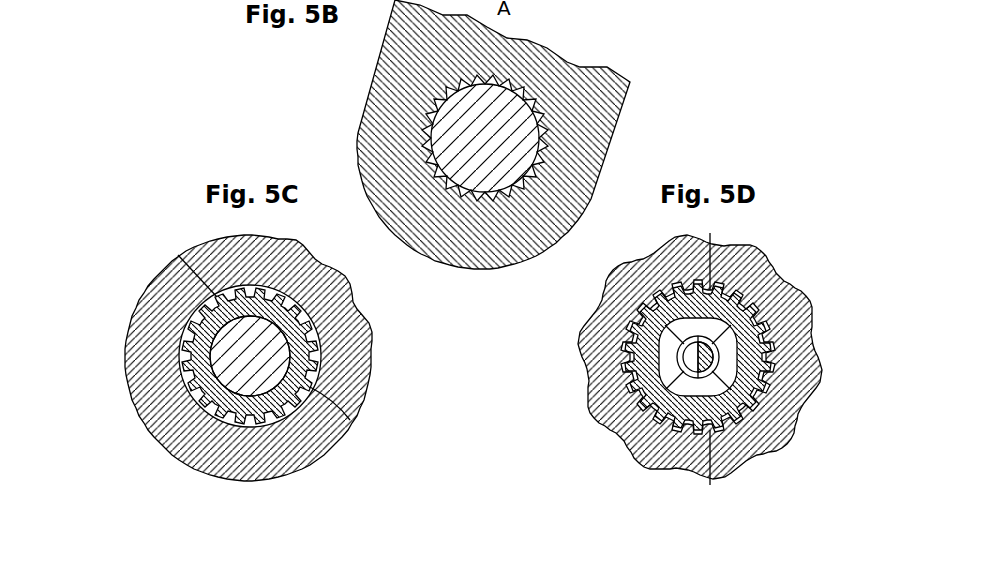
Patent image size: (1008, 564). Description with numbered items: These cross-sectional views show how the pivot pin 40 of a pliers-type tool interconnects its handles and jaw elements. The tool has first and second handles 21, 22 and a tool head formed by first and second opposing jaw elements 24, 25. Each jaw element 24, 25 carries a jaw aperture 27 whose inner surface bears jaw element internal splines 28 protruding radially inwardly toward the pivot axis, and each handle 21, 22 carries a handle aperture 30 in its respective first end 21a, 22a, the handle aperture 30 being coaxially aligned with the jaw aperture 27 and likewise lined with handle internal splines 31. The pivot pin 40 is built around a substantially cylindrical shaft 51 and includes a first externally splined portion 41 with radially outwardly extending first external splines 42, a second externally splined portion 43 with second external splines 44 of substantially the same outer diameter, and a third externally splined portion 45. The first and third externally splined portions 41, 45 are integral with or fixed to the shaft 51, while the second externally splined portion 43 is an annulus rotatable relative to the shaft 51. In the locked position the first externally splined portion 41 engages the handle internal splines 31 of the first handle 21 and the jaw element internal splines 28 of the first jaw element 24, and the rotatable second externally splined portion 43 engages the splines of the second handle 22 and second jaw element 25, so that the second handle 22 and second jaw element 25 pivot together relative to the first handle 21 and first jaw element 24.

In FIG. 5B, the first handle 21 is at (600, 80).
In FIG. 5D, the first handle 21 is at (807, 367).
In FIG. 5B, the first end of first handle 21a is at (618, 125).
In FIG. 5D, the first end of first handle 21a is at (803, 412).
In FIG. 5C, the second handle 22 is at (153, 300).
In FIG. 5C, the first end of second handle 22a is at (133, 343).
In FIG. 5D, the first jaw element 24 is at (587, 323).
In FIG. 5C, the second jaw element 25 is at (372, 326).
In FIG. 5C, the jaw aperture 27 is at (303, 310).
In FIG. 5D, the jaw aperture 27 is at (643, 400).
In FIG. 5C, the jaw element internal splines 28 is at (297, 300).
In FIG. 5D, the jaw element internal splines 28 is at (643, 380).
In FIG. 5B, the handle aperture 30 is at (528, 98).
In FIG. 5C, the handle aperture 30 is at (187, 378).
In FIG. 5D, the handle aperture 30 is at (803, 337).
In FIG. 5B, the handle internal splines 31 is at (548, 160).
In FIG. 5C, the handle internal splines 31 is at (193, 391).
In FIG. 5D, the handle internal splines 31 is at (762, 322).
In FIG. 5B, the pivot pin 40 is at (508, 163).
In FIG. 5C, the pivot pin 40 is at (267, 380).
In FIG. 5D, the pivot pin 40 is at (743, 360).
In FIG. 5D, the first externally splined portion 41 is at (743, 397).
In FIG. 5D, the first external splines 42 is at (680, 290).
In FIG. 5C, the second externally splined portion 43 is at (310, 350).
In FIG. 5C, the second external splines 44 is at (258, 298).
In FIG. 5B, the third externally splined portion 45 is at (432, 147).
In FIG. 5C, the shaft 51 is at (277, 382).
In FIG. 5D, the shaft 51 is at (697, 387).